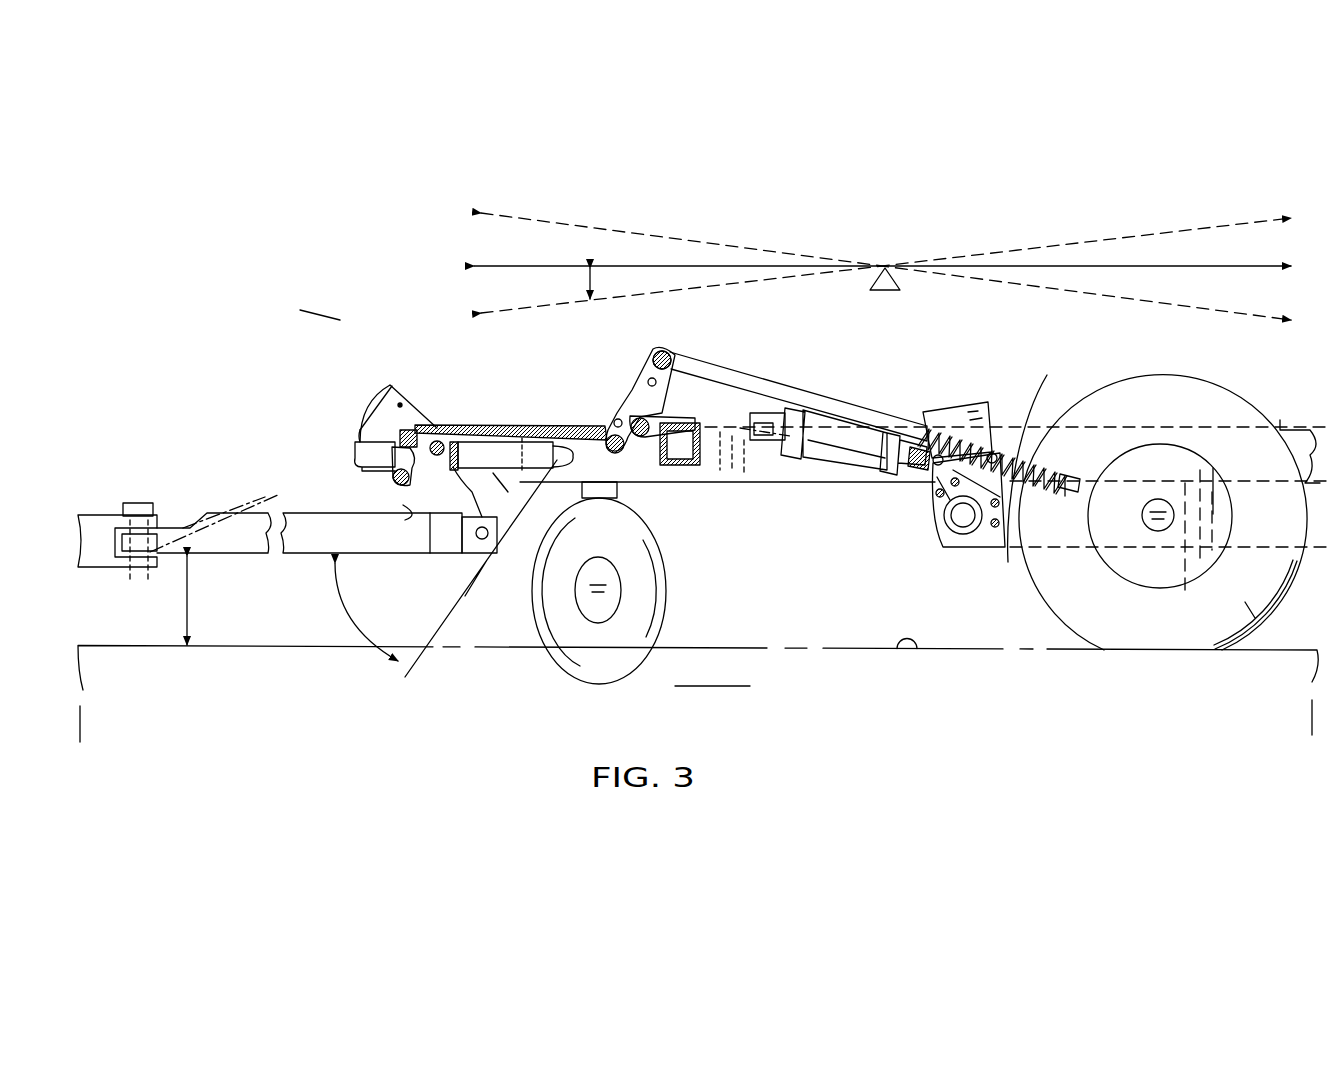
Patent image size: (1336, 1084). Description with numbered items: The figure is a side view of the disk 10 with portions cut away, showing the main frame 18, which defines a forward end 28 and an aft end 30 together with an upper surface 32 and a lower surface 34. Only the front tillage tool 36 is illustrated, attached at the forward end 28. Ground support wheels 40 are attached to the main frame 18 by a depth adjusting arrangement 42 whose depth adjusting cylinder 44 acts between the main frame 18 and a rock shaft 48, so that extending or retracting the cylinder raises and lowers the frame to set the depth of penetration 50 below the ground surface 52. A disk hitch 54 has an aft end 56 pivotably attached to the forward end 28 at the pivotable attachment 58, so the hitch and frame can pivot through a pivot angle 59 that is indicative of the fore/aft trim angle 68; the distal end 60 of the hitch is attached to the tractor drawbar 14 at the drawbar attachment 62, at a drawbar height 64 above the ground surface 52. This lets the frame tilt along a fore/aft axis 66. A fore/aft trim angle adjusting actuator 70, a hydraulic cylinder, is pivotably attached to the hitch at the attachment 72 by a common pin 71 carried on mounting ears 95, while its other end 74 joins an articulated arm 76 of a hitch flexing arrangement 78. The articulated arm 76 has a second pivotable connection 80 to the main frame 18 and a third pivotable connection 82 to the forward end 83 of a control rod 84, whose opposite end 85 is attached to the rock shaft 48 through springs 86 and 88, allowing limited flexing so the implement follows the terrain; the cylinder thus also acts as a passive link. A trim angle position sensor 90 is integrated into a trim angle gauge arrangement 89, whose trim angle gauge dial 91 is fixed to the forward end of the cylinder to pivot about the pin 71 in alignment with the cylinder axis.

The disk 10 is at (356, 326).
The tractor drawbar 14 is at (115, 515).
The main frame 18 is at (785, 484).
The forward end 28 is at (520, 520).
The aft end 30 is at (1285, 430).
The upper surface 32 is at (1023, 427).
The lower surface 34 is at (767, 485).
The front tillage tool 36 is at (557, 666).
The ground support wheel 40 is at (1248, 604).
The depth adjusting arrangement 42 is at (962, 410).
The depth adjusting cylinder 44 is at (837, 463).
The rock shaft 48 is at (990, 522).
The depth of penetration 50 is at (712, 618).
The ground surface 52 is at (897, 652).
The disk hitch 54 is at (305, 515).
The aft end of hitch 56 is at (440, 553).
The pivotable attachment 58 is at (487, 560).
The pivot angle 59 is at (350, 628).
The distal end of hitch 60 is at (168, 530).
The drawbar attachment 62 is at (138, 503).
The drawbar height 64 is at (186, 600).
The fore/aft axis 66 is at (1197, 268).
The fore/aft trim angle 68 is at (588, 285).
The fore/aft trim angle adjusting actuator 70 is at (510, 426).
The common pin 71 is at (440, 427).
The pivotable attachment of cylinder to hitch 72 is at (437, 427).
The other end of trim cylinder 74 is at (610, 427).
The articulated arm 76 is at (625, 400).
The hitch flexing arrangement 78 is at (798, 352).
The second pivotable connection 80 is at (643, 436).
The third pivotable connection 82 is at (668, 356).
The forward end of control rod 83 is at (670, 354).
The control rod 84 is at (820, 397).
The opposite end of control rod 85 is at (1078, 491).
The spring 86 is at (960, 432).
The spring 88 is at (1017, 452).
The trim angle gauge arrangement 89 is at (348, 406).
The trim angle position sensor 90 is at (392, 476).
The trim angle gauge dial 91 is at (359, 430).
The mounting ears 95 is at (405, 507).